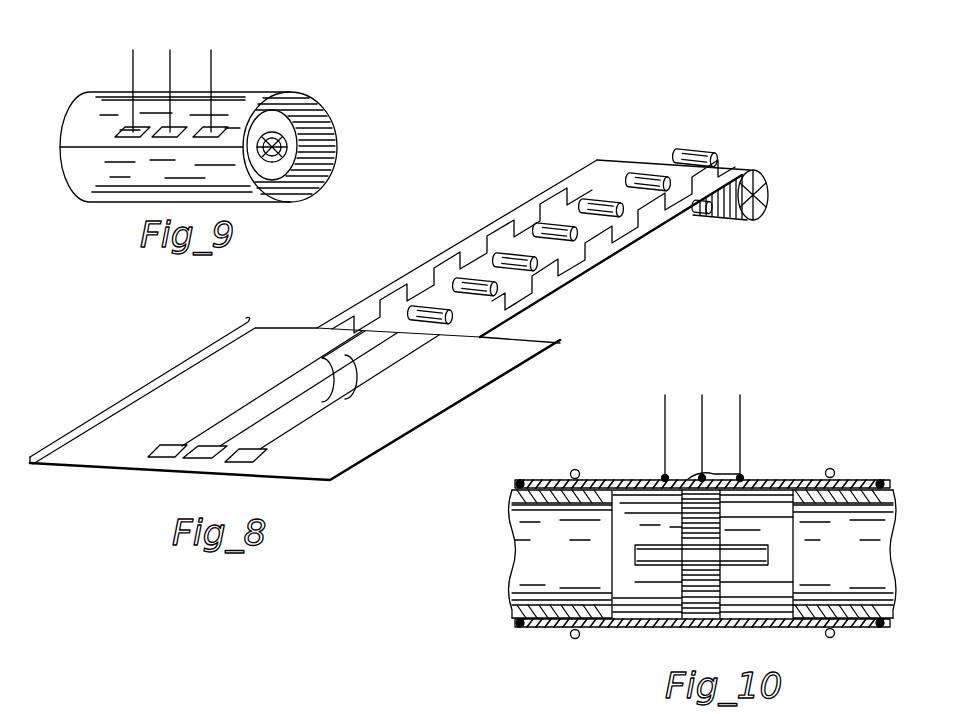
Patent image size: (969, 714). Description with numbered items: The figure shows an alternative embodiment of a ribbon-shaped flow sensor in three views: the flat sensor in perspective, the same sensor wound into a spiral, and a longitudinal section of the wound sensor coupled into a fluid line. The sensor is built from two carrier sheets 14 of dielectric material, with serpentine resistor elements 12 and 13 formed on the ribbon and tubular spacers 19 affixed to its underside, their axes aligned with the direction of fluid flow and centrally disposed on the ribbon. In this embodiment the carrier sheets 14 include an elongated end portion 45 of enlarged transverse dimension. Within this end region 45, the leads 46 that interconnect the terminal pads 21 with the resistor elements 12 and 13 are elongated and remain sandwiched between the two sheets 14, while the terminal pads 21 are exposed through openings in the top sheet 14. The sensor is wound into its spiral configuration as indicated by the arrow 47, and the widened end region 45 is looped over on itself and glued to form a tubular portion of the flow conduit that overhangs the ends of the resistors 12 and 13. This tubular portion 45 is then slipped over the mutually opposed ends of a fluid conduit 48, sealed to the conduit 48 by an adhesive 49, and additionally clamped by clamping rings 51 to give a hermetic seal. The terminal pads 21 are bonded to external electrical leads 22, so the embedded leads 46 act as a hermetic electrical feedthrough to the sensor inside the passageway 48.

In FIG. 8, the serpentine resistor element 12 is at (507, 214).
In FIG. 8, the resistor 13 is at (639, 232).
In FIG. 8, the carrier sheets 14 is at (219, 413).
In FIG. 8, the tubular spacers 19 is at (432, 306).
In FIG. 9, the terminal pads 21 is at (214, 138).
In FIG. 8, the terminal pads 21 is at (228, 463).
In FIG. 10, the terminal pads 21 is at (690, 470).
In FIG. 9, the electrical leads 22 is at (223, 50).
In FIG. 10, the electrical leads 22 is at (752, 397).
In FIG. 9, the elongated end portion 45 is at (240, 92).
In FIG. 8, the elongated end portion 45 is at (152, 382).
In FIG. 10, the elongated end portion 45 is at (626, 482).
In FIG. 8, the leads 46 is at (312, 362).
In FIG. 8, the arrow 47 is at (780, 186).
In FIG. 10, the fluid conduit 48 is at (574, 576).
In FIG. 10, the adhesive 49 is at (519, 481).
In FIG. 10, the clamping rings 51 is at (575, 469).